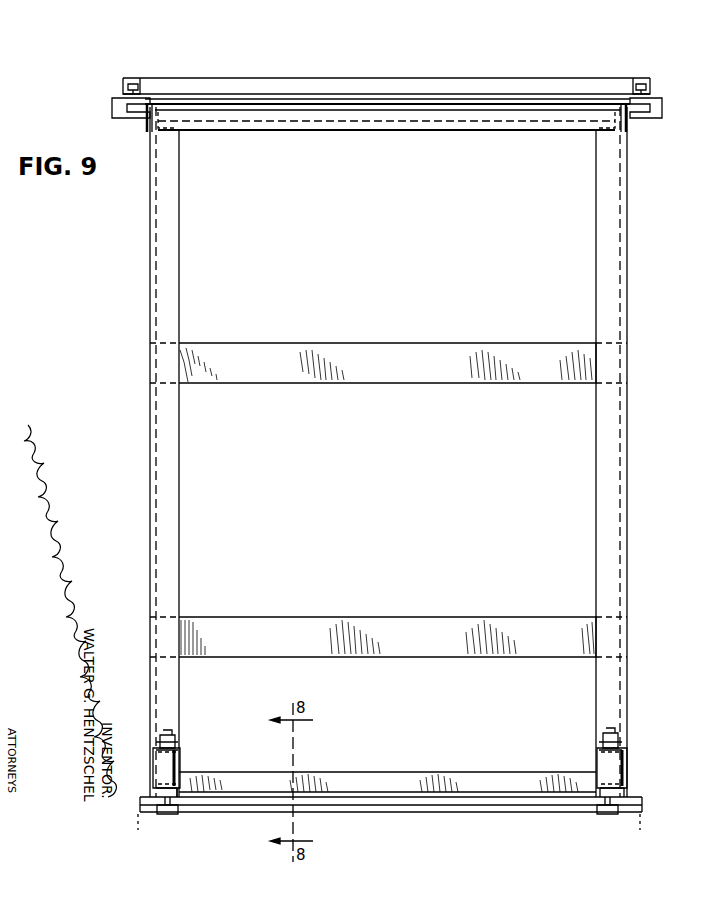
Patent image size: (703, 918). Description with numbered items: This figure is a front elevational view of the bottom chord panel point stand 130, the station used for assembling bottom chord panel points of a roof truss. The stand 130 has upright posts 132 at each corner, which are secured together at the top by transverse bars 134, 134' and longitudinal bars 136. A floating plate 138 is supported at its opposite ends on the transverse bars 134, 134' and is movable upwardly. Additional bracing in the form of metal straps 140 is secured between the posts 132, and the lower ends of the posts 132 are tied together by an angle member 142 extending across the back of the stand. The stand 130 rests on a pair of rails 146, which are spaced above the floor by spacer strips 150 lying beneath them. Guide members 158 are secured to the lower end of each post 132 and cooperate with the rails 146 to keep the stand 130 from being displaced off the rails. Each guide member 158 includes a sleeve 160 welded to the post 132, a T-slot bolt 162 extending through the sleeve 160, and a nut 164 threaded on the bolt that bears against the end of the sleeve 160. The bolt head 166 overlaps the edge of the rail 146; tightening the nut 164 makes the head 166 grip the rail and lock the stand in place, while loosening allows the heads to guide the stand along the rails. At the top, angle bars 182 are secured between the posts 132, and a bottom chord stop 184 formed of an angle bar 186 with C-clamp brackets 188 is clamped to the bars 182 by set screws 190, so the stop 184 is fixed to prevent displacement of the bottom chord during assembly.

The bottom chord panel point stand 130 is at (142, 432).
The upright post 132 is at (158, 323).
The transverse bar 134 is at (168, 86).
The transverse bar 134' is at (584, 133).
The longitudinal bar 136 is at (458, 118).
The floating plate 138 is at (350, 122).
The metal strap 140 is at (414, 322).
The angle member 142 is at (390, 778).
The rail 146 is at (376, 805).
The spacer strip 150 is at (460, 808).
The guide member 158 is at (153, 782).
The sleeve 160 is at (172, 762).
The T-slot bolt 162 is at (168, 737).
The nut 164 is at (158, 752).
The bolt head 166 is at (168, 812).
The angle bar 182 is at (150, 126).
The bottom chord stop 184 is at (446, 52).
The angle bar 186 is at (291, 88).
The C-clamp bracket 188 is at (112, 106).
The set screw 190 is at (136, 84).